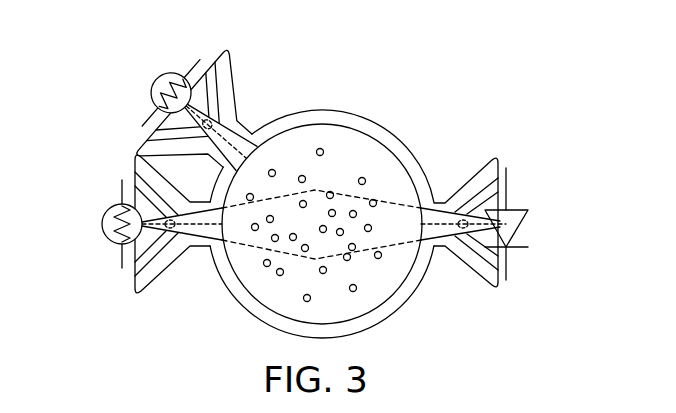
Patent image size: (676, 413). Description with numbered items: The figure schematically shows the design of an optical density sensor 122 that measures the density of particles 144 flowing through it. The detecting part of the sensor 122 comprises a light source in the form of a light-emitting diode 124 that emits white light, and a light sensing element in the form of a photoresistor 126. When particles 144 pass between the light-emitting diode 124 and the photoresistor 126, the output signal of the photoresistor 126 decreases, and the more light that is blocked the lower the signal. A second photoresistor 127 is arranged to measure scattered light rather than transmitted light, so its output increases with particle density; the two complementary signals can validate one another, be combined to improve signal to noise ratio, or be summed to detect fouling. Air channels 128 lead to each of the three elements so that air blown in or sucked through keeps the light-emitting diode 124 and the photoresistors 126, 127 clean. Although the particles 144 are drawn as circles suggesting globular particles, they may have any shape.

The optical density sensor 122 is at (304, 63).
The light-emitting diode 124 is at (513, 223).
The photoresistor 126 is at (117, 238).
The second photoresistor 127 is at (162, 83).
The air channels 128 is at (485, 182).
The particles 144 is at (369, 232).